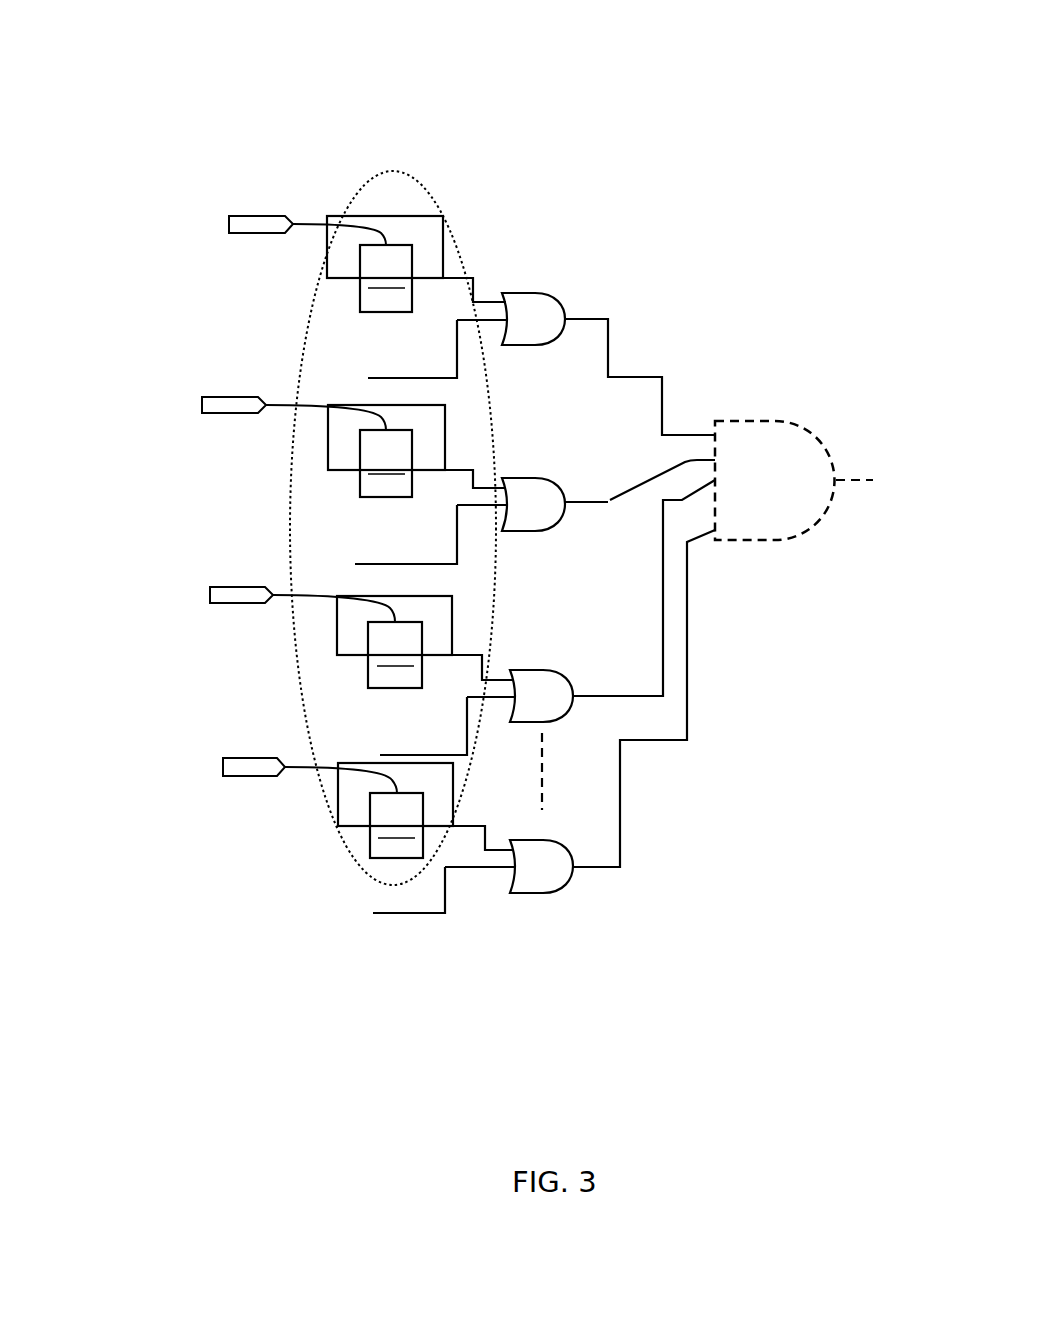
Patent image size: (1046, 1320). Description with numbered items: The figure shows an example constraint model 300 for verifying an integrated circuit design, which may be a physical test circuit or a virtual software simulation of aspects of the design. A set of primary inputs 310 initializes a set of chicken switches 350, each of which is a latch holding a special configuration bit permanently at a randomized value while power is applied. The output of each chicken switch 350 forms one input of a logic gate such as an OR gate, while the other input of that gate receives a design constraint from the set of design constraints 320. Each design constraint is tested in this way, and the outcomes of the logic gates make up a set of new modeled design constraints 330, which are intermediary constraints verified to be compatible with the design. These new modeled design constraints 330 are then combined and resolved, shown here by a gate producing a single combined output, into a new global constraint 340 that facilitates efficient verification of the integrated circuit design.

The constraint model 300 is at (547, 34).
The set of primary inputs 310 is at (166, 250).
The set of design constraints 320 is at (360, 398).
The set of new modeled design constraints 330 is at (606, 312).
The new global constraint 340 is at (880, 410).
The chicken switch 350 is at (390, 537).